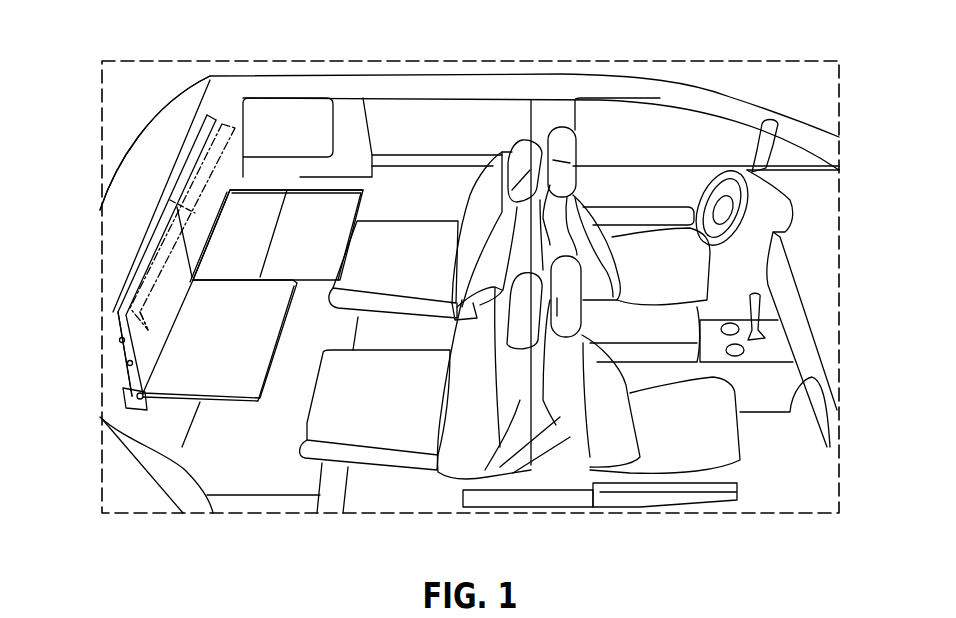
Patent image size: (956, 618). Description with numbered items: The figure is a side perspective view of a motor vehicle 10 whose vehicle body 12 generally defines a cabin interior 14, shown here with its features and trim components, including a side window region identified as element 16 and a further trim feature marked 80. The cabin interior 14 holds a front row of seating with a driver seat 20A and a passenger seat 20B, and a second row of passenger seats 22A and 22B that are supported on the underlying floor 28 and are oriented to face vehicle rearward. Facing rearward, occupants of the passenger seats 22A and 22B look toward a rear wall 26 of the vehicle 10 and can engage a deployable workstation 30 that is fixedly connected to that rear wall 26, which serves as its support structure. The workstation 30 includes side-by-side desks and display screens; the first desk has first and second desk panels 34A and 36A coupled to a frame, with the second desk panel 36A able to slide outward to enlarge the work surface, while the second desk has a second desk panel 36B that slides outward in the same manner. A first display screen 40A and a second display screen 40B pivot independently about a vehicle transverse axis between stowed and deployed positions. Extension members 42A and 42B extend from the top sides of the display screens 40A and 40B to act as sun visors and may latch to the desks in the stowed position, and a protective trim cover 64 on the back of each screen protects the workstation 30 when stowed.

The motor vehicle 10 is at (795, 58).
The vehicle body 12 is at (552, 90).
The cabin interior 14 is at (372, 500).
The side window 16 is at (425, 187).
The driver seat 20A is at (700, 277).
The passenger seat 20B is at (700, 433).
The passenger seat 22A is at (430, 243).
The passenger seat 22B is at (300, 430).
The rear wall 26 is at (152, 412).
The floor 28 is at (408, 495).
The deployable workstation 30 is at (267, 157).
The first desk panel 34A is at (247, 200).
The second desk panel 36A is at (323, 205).
The second desk panel 36B is at (180, 362).
The first display screen 40A is at (210, 209).
The second display screen 40B is at (157, 310).
The extension member 42A is at (205, 110).
The extension member 42B is at (140, 312).
The protective trim cover 64 is at (125, 396).
The door frame 80 is at (125, 210).